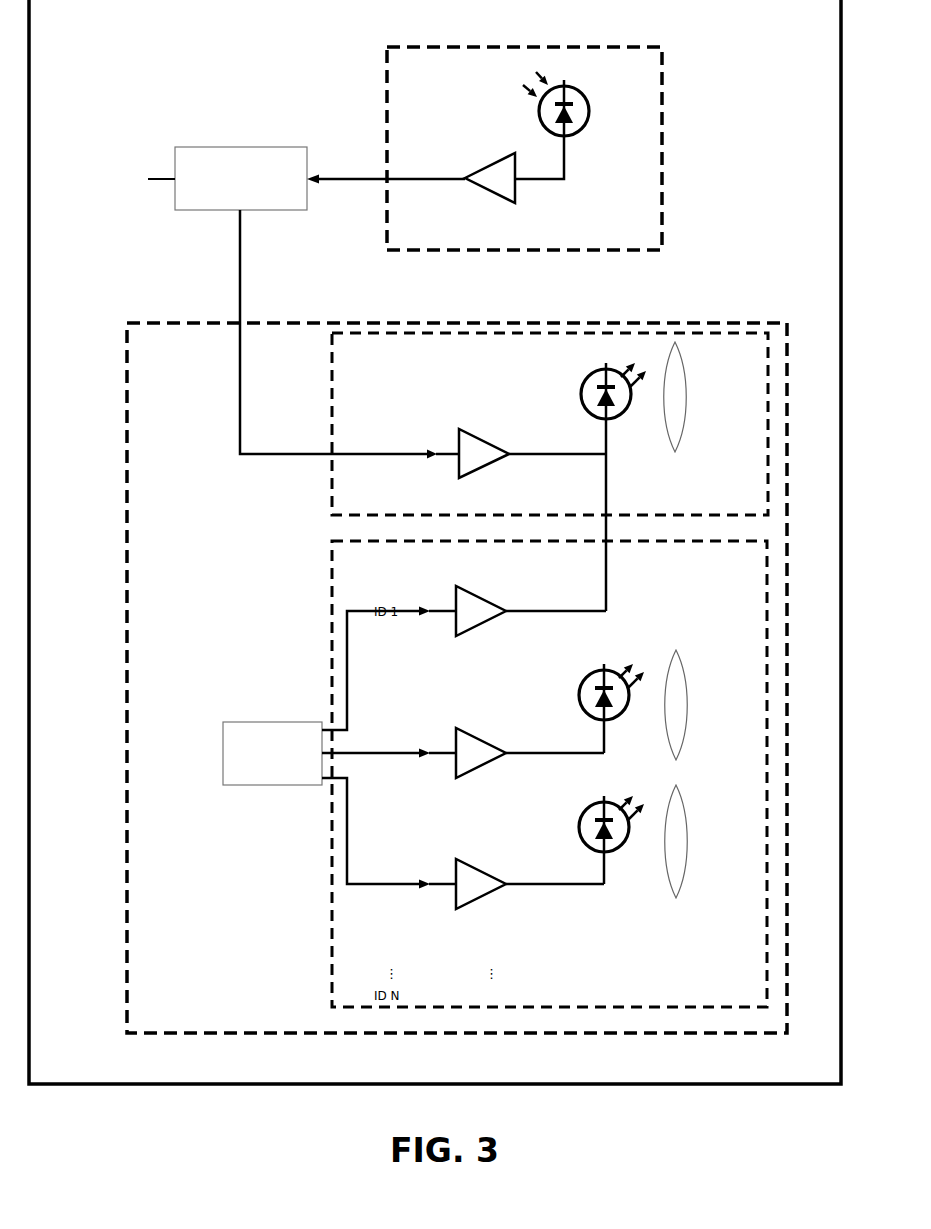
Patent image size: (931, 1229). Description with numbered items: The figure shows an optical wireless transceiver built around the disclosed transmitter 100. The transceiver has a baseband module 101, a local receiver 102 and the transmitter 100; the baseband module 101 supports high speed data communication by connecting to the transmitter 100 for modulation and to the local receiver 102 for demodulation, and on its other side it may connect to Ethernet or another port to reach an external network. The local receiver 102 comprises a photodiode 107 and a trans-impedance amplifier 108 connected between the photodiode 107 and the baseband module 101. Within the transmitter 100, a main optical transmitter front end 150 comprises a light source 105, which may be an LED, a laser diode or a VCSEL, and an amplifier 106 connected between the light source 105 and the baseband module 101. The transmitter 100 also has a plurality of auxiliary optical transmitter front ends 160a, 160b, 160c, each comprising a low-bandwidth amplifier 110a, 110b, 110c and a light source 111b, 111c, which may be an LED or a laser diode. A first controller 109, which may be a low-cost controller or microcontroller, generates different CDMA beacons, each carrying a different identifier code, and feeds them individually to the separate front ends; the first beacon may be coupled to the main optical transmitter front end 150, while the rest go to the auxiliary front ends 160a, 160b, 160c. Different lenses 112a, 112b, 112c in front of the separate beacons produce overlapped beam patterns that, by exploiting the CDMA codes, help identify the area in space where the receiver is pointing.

The transmitter 100 is at (719, 323).
The baseband module 101 is at (241, 147).
The local receiver 102 is at (662, 149).
The light source 105 is at (584, 404).
The amplifier 106 is at (459, 440).
The photodiode 107 is at (589, 113).
The trans-impedance amplifier 108 is at (490, 163).
The first controller 109 is at (223, 752).
The low-bandwidth amplifier 110a is at (456, 597).
The low-bandwidth amplifier 110b is at (456, 739).
The low-bandwidth amplifier 110c is at (456, 870).
The light source 111b is at (582, 705).
The light source 111c is at (582, 837).
The lens 112a is at (685, 399).
The lens 112b is at (686, 707).
The lens 112c is at (686, 845).
The main optical transmitter front end 150 is at (748, 503).
The auxiliary optical transmitter front end 160a is at (748, 998).
The auxiliary optical transmitter front end 160b is at (389, 754).
The auxiliary optical transmitter front end 160c is at (389, 835).